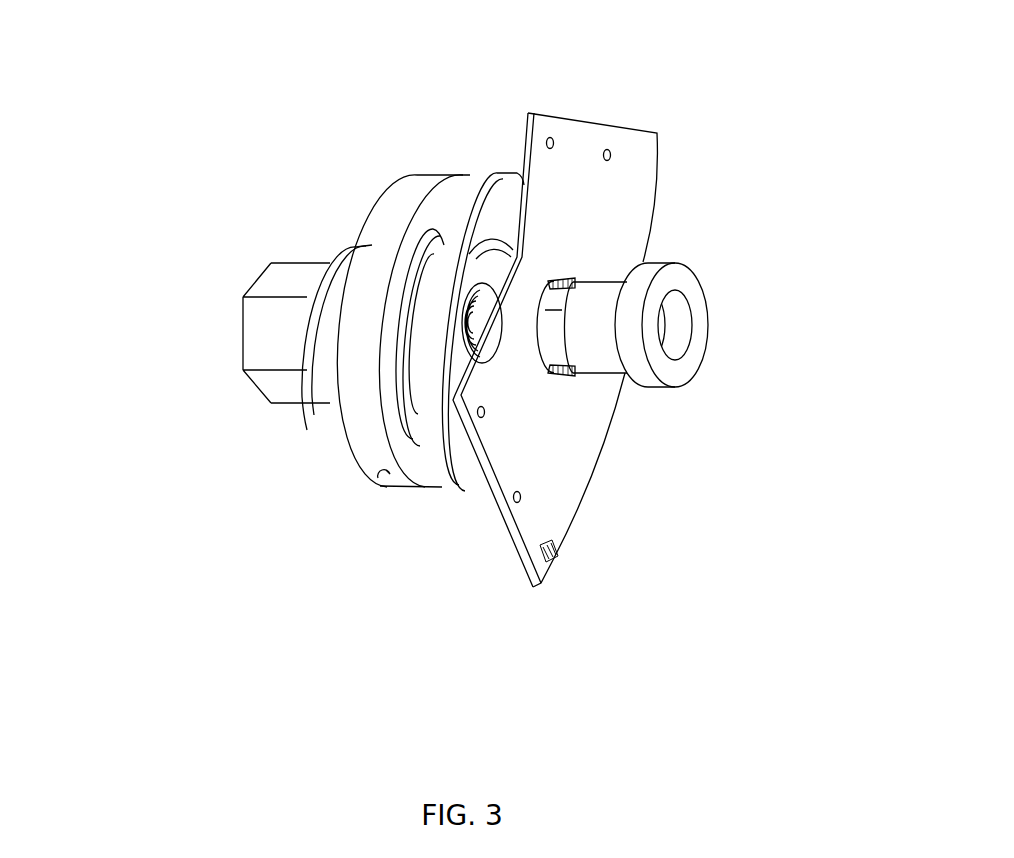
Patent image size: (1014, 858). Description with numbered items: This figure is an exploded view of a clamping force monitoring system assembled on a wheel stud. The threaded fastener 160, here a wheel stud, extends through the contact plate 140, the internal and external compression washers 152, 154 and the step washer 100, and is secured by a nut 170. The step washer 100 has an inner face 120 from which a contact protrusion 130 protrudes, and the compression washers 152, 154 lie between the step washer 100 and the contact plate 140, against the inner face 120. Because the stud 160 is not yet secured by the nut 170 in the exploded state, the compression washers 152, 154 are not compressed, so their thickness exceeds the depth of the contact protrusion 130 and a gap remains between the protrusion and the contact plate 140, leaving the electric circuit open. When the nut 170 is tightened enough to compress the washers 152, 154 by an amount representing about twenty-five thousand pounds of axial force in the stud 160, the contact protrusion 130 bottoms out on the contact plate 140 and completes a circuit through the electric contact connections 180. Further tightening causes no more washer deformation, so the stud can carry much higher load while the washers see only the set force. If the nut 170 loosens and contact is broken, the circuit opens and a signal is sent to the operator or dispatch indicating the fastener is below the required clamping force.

The step washer 100 is at (420, 184).
The inner face 120 is at (387, 403).
The contact protrusion 130 is at (408, 297).
The contact plate 140 is at (618, 218).
The internal compression washer 152 is at (496, 266).
The external compression washer 154 is at (489, 198).
The threaded fastener 160 is at (673, 277).
The nut 170 is at (265, 329).
The electric contact connections 180 is at (557, 560).